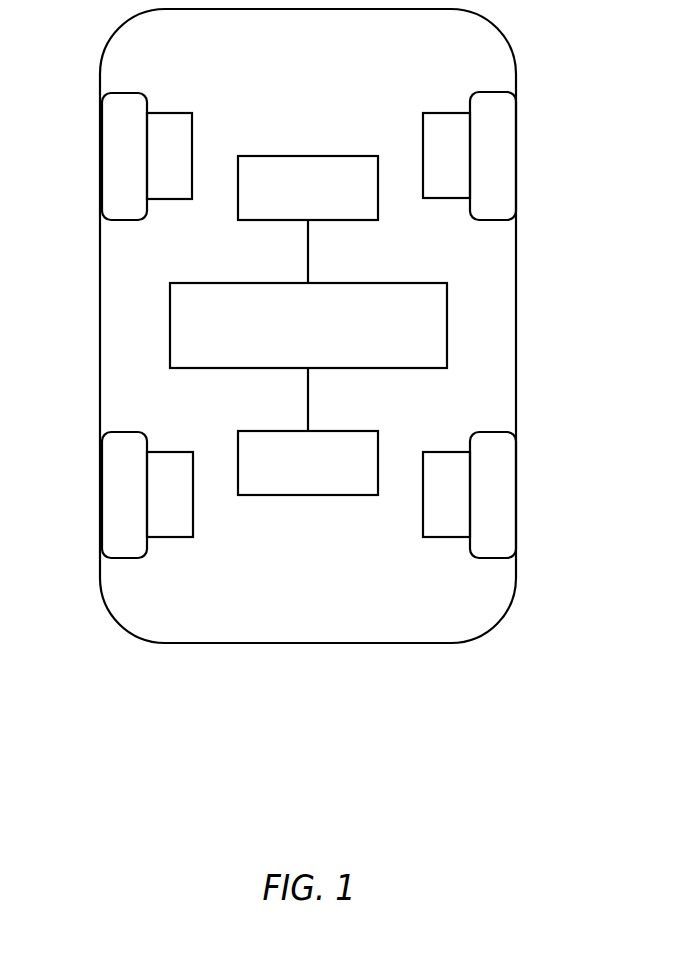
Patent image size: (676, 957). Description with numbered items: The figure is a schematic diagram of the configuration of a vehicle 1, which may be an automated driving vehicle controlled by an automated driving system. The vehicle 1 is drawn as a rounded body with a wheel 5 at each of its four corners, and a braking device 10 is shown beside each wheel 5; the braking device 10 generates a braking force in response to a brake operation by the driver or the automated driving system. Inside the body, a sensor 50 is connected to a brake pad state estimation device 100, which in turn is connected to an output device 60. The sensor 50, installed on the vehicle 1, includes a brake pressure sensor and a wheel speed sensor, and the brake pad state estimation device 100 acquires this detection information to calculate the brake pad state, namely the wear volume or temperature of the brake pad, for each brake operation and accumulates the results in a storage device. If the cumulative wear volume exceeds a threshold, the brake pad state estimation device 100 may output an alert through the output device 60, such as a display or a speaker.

The vehicle 1 is at (308, 643).
The wheel 5 is at (100, 156).
The braking device 10 is at (168, 113).
The sensor 50 is at (306, 156).
The output device 60 is at (308, 495).
The brake pad state estimation device 100 is at (215, 283).